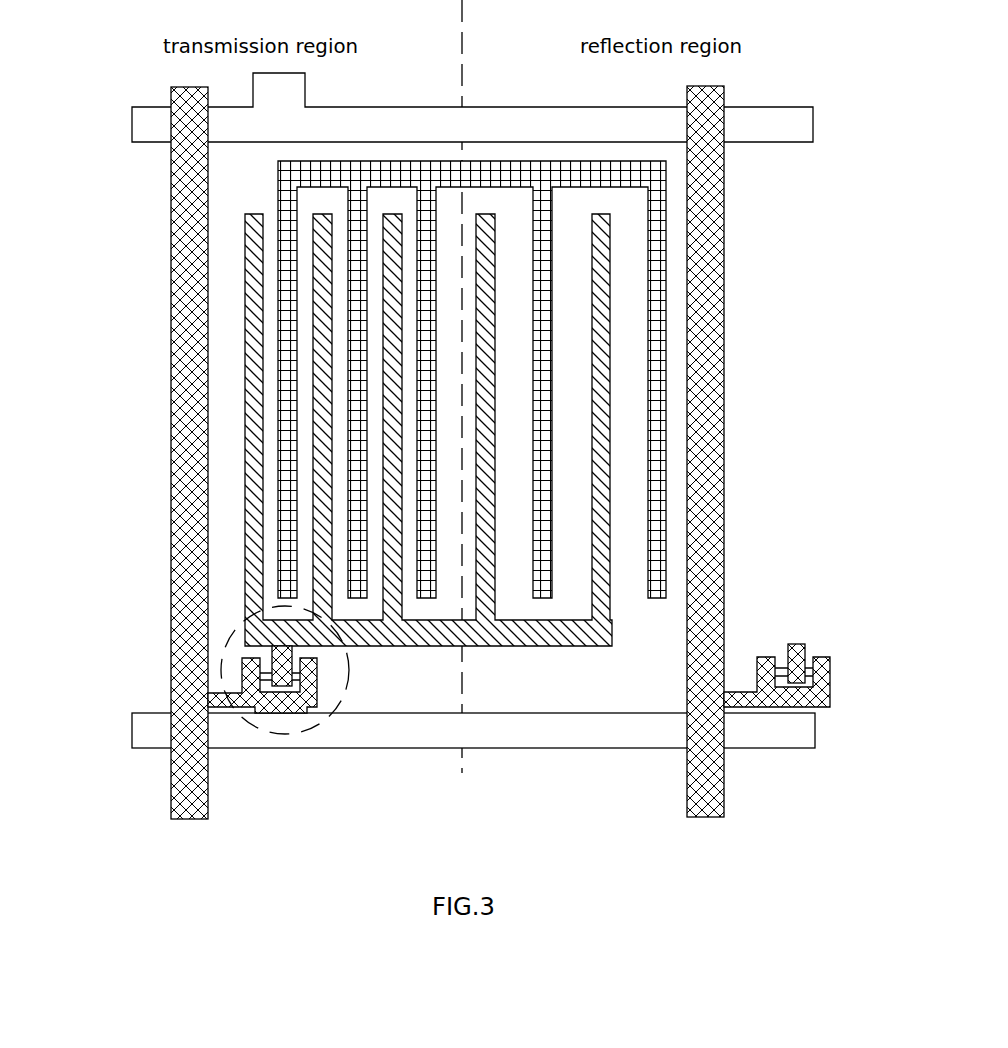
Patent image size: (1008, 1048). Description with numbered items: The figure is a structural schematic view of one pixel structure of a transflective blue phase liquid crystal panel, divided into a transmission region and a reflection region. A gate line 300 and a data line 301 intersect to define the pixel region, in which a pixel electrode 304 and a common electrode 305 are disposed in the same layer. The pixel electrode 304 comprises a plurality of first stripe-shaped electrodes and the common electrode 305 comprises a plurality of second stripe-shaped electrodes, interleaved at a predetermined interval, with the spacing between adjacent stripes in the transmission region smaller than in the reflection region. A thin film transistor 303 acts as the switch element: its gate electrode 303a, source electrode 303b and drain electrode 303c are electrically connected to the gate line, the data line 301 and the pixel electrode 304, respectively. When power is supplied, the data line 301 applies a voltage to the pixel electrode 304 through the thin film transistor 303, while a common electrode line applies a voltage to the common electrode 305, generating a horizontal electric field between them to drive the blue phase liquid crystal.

The gate line 300 is at (150, 727).
The data line 301 is at (177, 800).
The thin film transistor 303 is at (464, 725).
The gate electrode 303a is at (267, 713).
The source electrode 303b is at (297, 712).
The drain electrode 303c is at (317, 687).
The pixel electrode 304 is at (247, 435).
The common electrode 305 is at (650, 222).